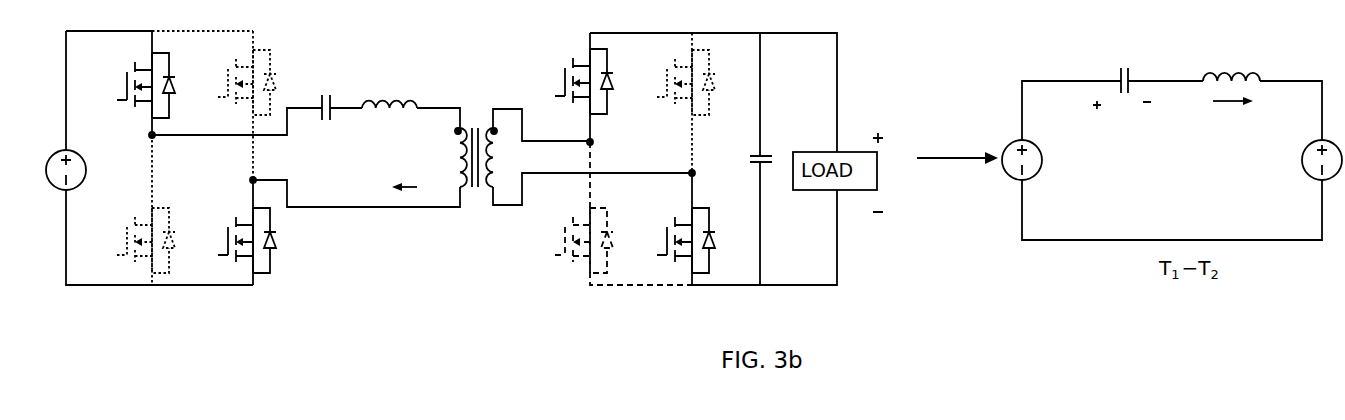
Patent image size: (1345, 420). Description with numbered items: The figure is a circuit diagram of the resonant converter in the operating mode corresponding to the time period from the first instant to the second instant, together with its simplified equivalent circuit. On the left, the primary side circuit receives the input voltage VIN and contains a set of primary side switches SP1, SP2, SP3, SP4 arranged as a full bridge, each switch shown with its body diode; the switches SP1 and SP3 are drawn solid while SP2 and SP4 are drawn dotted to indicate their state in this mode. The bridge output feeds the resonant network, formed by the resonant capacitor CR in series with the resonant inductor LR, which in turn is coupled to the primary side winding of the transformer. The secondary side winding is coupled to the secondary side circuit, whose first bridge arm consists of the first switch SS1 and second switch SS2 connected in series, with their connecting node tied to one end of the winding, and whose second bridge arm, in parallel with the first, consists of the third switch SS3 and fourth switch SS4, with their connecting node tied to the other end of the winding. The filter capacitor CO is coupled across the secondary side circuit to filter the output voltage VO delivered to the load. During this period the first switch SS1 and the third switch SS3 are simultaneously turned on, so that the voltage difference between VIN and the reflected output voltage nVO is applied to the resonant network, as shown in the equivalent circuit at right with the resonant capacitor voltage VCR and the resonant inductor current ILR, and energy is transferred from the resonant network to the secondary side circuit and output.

The primary side switch SP1 is at (123, 85).
The primary side switch SP2 is at (123, 240).
The primary side switch SP3 is at (228, 240).
The primary side switch SP4 is at (228, 82).
The first switch SS1 is at (559, 81).
The second switch SS2 is at (559, 240).
The third switch SS3 is at (666, 240).
The fourth switch SS4 is at (666, 82).
The resonant capacitor CR is at (736, 79).
The resonant inductor LR is at (811, 73).
The filter capacitor CO is at (740, 159).
The input voltage VIN is at (567, 165).
The output voltage VO is at (935, 172).
The reflected output voltage nVO is at (1289, 160).
The resonant capacitor voltage VCR is at (1125, 117).
The resonant inductor current ILR is at (798, 147).